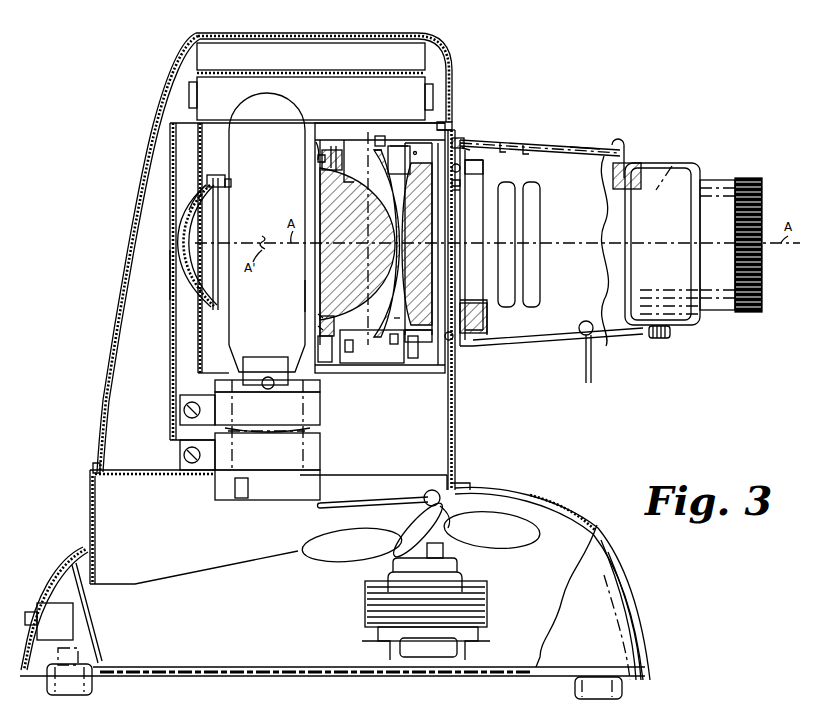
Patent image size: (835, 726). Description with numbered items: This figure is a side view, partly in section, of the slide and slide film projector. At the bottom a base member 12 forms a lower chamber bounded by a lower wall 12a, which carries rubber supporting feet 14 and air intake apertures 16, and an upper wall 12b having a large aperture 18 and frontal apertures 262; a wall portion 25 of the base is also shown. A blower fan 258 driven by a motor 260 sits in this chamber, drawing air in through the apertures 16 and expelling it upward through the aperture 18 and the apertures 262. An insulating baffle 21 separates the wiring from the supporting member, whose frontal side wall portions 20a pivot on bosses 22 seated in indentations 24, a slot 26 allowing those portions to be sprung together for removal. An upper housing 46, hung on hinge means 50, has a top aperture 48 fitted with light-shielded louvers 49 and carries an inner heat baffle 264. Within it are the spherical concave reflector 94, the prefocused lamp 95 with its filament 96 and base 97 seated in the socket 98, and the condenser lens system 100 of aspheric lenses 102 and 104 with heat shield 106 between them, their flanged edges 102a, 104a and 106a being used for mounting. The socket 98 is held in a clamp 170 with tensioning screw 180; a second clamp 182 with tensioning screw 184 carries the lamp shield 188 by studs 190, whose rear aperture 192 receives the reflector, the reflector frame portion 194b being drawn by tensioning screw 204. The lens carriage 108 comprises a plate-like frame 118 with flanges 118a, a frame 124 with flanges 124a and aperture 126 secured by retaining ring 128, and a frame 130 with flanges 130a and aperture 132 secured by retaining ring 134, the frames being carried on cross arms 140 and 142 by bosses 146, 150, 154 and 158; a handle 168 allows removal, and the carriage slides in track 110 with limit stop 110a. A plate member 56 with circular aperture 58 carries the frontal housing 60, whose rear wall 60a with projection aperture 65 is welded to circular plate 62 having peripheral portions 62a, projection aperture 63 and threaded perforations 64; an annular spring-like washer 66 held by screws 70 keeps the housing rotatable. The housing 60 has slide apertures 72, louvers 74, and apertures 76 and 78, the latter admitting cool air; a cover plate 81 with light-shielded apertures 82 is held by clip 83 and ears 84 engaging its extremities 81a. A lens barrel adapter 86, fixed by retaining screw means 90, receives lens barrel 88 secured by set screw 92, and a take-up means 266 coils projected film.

The base member 12 is at (585, 644).
The lower wall 12a is at (370, 677).
The upper wall 12b is at (551, 500).
The supporting feet 14 is at (624, 691).
The apertures 16 is at (483, 677).
The aperture 18 is at (87, 538).
The frontal side wall portions 20a is at (258, 536).
The insulating baffle 21 is at (88, 606).
The bosses 22 is at (425, 492).
The indentations 24 is at (424, 516).
The front panel 25 is at (92, 482).
The slots 26 is at (345, 502).
The upper housing 46 is at (108, 397).
The aperture 48 is at (372, 29).
The light-shielded louvers 49 is at (314, 65).
The hinge means 50 is at (95, 468).
The plate member 56 is at (455, 412).
The circular aperture 58 is at (446, 338).
The frontal housing 60 is at (623, 268).
The rear wall portion 60a is at (468, 190).
The circular plate 62 is at (459, 170).
The peripheral portions 62a is at (474, 165).
The projection aperture 63 is at (454, 192).
The threaded perforations 64 is at (488, 306).
The projection aperture 65 is at (456, 186).
The annular spring-like washer 66 is at (437, 243).
The screws 70 is at (448, 160).
The slot-like apertures 72 is at (485, 312).
The light-shielded apertures 74 is at (539, 258).
The aperture 76 is at (566, 146).
The aperture 78 is at (540, 346).
The cover plate 81 is at (595, 145).
The extremities 81a is at (468, 148).
The light-shielded apertures 82 is at (511, 141).
The clip 83 is at (621, 146).
The ears 84 is at (463, 140).
The lens barrel adapter 86 is at (672, 229).
The lens barrel 88 is at (724, 225).
The retaining screw means 90 is at (613, 176).
The set screw 92 is at (671, 336).
The spherical concave reflector 94 is at (194, 278).
The prefocused filament lamp 95 is at (274, 280).
The filament 96 is at (264, 240).
The base 97 is at (322, 386).
The socket 98 is at (322, 431).
The condenser lens system 100 is at (303, 290).
The aspheric lens element 102 is at (360, 248).
The flanged edge 102a is at (318, 160).
The aspheric lens element 104 is at (416, 244).
The flanged edge 104a is at (426, 342).
The heat shield 106 is at (387, 243).
The flanged edge 106a is at (378, 150).
The carriage 108 is at (363, 152).
The track member 110 is at (392, 360).
The limit stop 110a is at (359, 351).
The plate-like frame 118 is at (328, 182).
The vertical flange portions 118a is at (380, 138).
The frame 124 is at (331, 146).
The vertical flange portions 124a is at (336, 146).
The circular aperture 126 is at (318, 316).
The rimmed retaining ring 128 is at (318, 328).
The frame 130 is at (412, 349).
The vertical flange portions 130a is at (405, 152).
The circular aperture 132 is at (392, 340).
The rimmed retaining ring 134 is at (419, 239).
The cross arm 140 is at (400, 160).
The cross arm 142 is at (360, 329).
The pivotal boss 146 is at (331, 349).
The detent boss 150 is at (320, 148).
The boss 154 is at (404, 323).
The boss 158 is at (415, 152).
The handle 168 is at (369, 132).
The clamp 170 is at (322, 455).
The tensioning screw 180 is at (180, 461).
The second clamp 182 is at (322, 407).
The tensioning screw 184 is at (180, 407).
The lamp shield and heat baffle 188 is at (200, 348).
The supporting studs 190 is at (250, 357).
The circular aperture 192 is at (213, 300).
The reinforced portion 194b is at (215, 175).
The tensioning screw 204 is at (206, 185).
The blower fan 258 is at (515, 540).
The motor 260 is at (487, 606).
The apertures 262 is at (491, 483).
The inner heat baffle 264 is at (170, 272).
The take-up means 266 is at (590, 362).